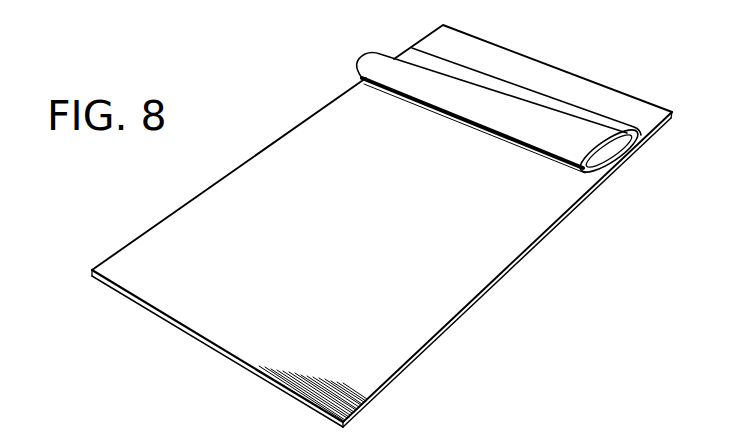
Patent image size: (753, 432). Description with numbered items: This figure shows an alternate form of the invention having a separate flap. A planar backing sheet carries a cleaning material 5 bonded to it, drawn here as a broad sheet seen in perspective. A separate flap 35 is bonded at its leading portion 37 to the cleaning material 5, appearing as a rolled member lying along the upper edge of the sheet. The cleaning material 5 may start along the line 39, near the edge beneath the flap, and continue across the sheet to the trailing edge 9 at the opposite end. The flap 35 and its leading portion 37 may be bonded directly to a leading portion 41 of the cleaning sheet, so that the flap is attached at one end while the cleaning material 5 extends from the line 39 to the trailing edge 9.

The cleaning material 5 is at (178, 210).
The trailing edge 9 is at (222, 349).
The separate flap 35 is at (579, 139).
The leading portion 37 is at (527, 97).
The line 39 is at (558, 221).
The leading portion of the cleaning sheet 41 is at (598, 186).